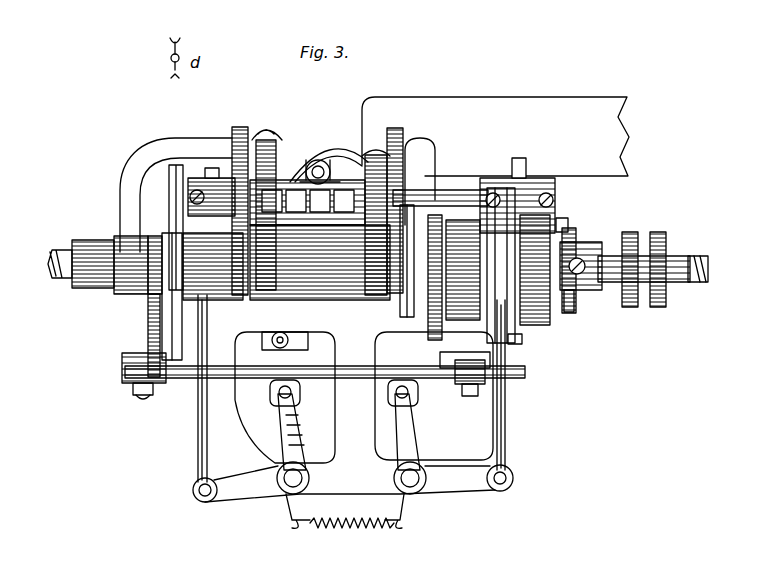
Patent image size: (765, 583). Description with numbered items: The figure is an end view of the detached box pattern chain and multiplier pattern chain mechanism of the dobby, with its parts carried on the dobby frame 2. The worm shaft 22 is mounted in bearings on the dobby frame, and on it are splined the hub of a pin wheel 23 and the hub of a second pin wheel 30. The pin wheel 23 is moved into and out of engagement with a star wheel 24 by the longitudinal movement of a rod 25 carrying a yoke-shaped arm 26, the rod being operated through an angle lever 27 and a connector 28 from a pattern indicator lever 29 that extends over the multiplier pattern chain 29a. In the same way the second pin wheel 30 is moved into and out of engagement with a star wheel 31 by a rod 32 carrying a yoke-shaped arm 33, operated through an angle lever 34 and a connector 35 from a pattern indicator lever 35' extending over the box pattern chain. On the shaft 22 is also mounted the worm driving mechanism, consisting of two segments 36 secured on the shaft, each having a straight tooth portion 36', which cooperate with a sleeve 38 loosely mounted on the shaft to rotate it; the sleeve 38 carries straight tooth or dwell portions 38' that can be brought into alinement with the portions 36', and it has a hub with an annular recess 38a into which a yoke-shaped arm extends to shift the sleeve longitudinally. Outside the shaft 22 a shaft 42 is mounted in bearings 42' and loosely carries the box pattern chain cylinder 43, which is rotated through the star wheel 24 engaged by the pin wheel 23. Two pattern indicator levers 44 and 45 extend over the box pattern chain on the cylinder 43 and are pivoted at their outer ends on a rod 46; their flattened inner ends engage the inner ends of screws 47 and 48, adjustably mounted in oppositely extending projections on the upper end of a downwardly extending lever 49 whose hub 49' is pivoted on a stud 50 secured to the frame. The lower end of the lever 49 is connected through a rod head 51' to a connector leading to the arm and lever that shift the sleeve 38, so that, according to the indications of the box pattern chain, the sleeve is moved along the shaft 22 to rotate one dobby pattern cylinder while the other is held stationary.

The dobby frame 2 is at (490, 103).
The worm shaft 22 is at (64, 265).
The pin wheel 23 is at (150, 322).
The star wheel 24 is at (168, 195).
The rod 25 is at (128, 368).
The yoke-shaped arm 26 is at (160, 312).
The angle lever 27 is at (410, 440).
The connector 28 is at (506, 436).
The pattern indicator lever 29 is at (520, 166).
The multiplier pattern chain 29a is at (562, 222).
The second pin wheel 30 is at (412, 310).
The star wheel 31 is at (446, 300).
The rod 32 is at (452, 382).
The yoke-shaped arm 33 is at (512, 340).
The angle lever 34 is at (290, 412).
The connector 35 is at (181, 388).
The pattern indicator lever 35' is at (207, 161).
The segment 36 is at (593, 276).
The straight tooth portion 36' is at (578, 313).
The sleeve 38 is at (676, 258).
The straight tooth or dwell portion 38' is at (583, 259).
The annular recess 38a is at (634, 236).
The shaft 42 is at (360, 262).
The bearings 42' is at (268, 226).
The box pattern chain cylinder 43 is at (250, 300).
The pattern indicator lever 44 is at (240, 128).
The pattern indicator lever 45 is at (370, 158).
The rod 46 is at (462, 192).
The screw 47 is at (268, 126).
The screw 48 is at (380, 170).
The downwardly extending lever 49 is at (274, 343).
The hub 49' is at (329, 144).
The stud 50 is at (314, 166).
The rod head 51' is at (364, 385).